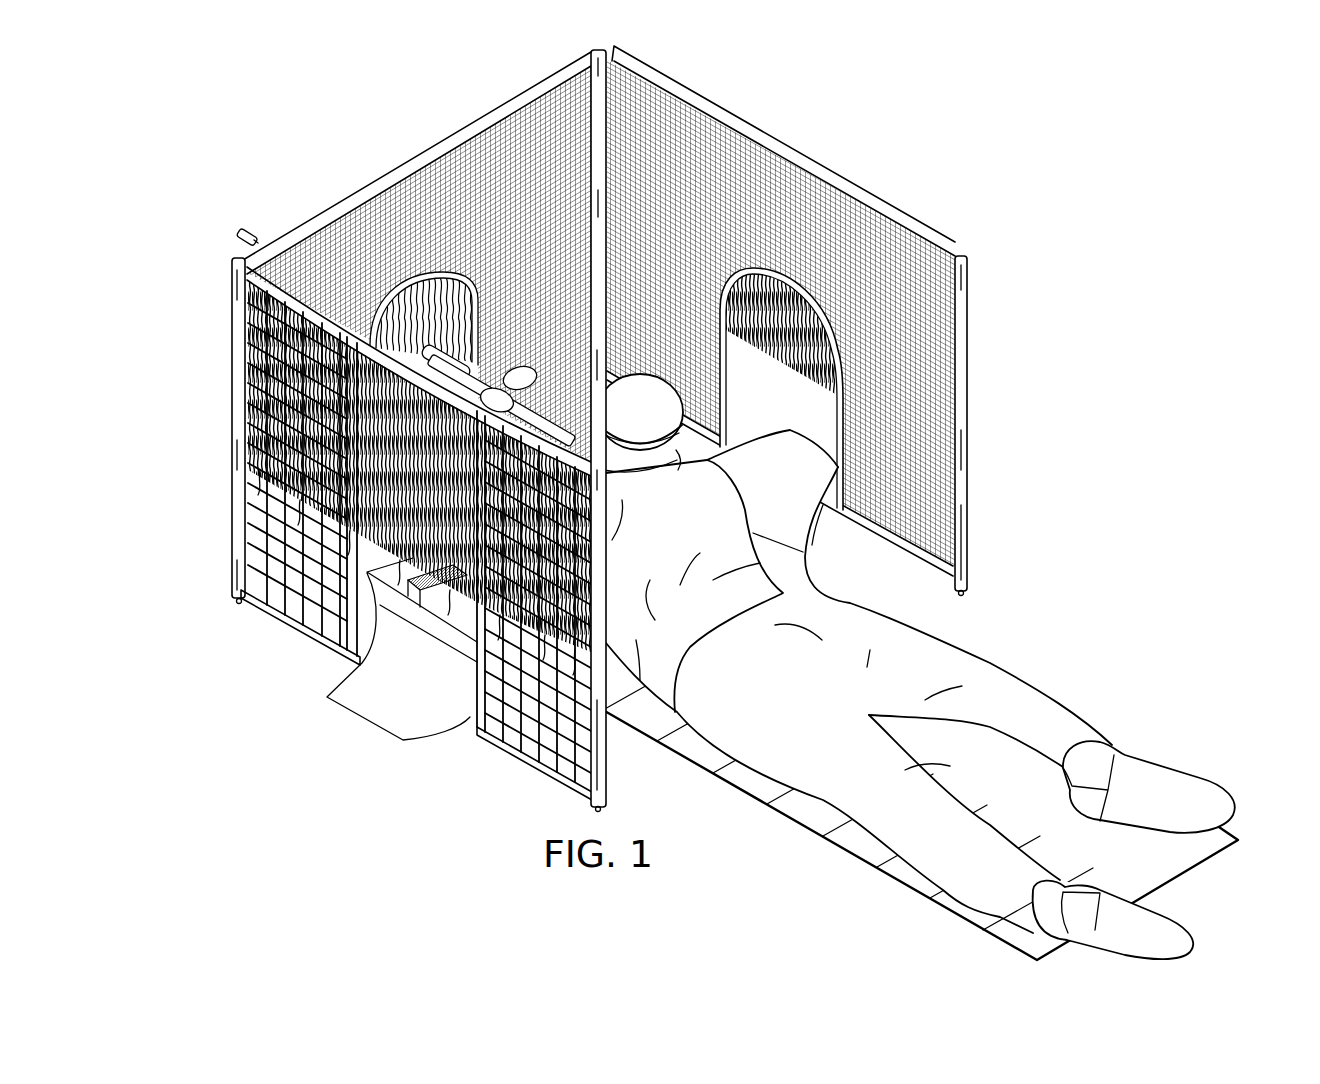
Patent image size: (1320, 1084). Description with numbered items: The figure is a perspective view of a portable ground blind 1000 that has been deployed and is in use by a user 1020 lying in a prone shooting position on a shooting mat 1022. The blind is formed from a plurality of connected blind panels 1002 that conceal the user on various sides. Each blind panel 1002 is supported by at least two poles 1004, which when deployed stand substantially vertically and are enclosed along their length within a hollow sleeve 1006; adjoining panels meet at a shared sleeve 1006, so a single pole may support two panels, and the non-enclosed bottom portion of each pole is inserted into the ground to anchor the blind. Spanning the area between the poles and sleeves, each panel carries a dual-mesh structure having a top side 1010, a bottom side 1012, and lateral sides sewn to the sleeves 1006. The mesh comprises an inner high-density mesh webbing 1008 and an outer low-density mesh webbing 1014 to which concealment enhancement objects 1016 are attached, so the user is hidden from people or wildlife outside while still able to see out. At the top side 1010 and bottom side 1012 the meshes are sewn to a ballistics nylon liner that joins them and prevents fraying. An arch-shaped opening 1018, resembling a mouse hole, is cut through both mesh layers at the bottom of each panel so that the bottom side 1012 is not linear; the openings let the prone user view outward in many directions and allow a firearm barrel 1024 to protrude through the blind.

The portable ground blind 1000 is at (337, 131).
The blind panel 1002 is at (788, 145).
The pole 1004 is at (973, 594).
The hollow sleeve 1006 is at (968, 474).
The inner high-density mesh webbing 1008 is at (942, 380).
The top side 1010 is at (495, 110).
The bottom side 1012 is at (277, 613).
The outer low-density mesh webbing 1014 is at (248, 487).
The concealment enhancement objects 1016 is at (240, 392).
The opening 1018 is at (833, 395).
The user 1020 is at (1073, 703).
The shooting mat 1022 is at (1207, 856).
The firearm barrel 1024 is at (241, 230).